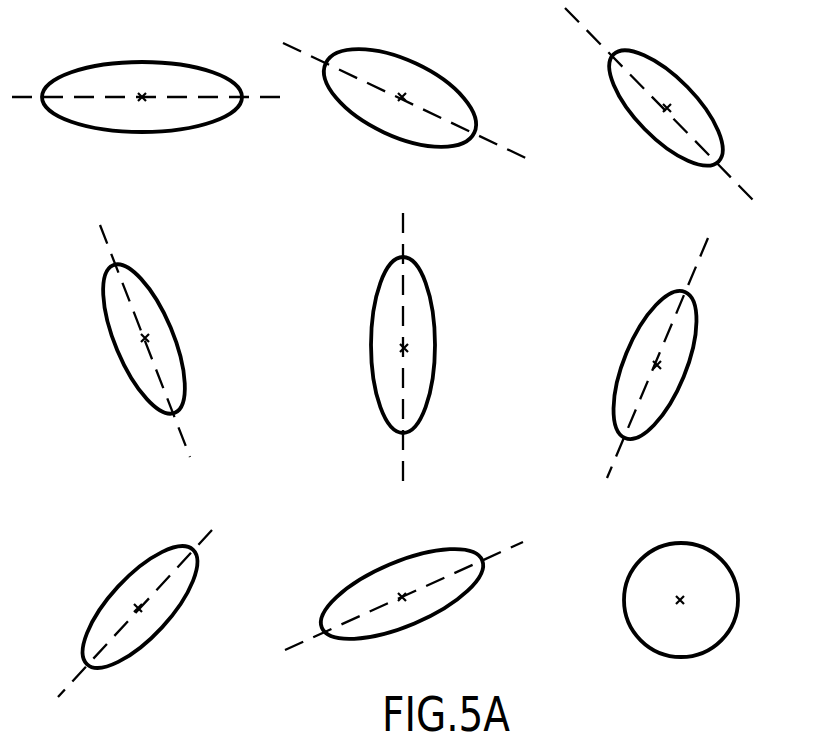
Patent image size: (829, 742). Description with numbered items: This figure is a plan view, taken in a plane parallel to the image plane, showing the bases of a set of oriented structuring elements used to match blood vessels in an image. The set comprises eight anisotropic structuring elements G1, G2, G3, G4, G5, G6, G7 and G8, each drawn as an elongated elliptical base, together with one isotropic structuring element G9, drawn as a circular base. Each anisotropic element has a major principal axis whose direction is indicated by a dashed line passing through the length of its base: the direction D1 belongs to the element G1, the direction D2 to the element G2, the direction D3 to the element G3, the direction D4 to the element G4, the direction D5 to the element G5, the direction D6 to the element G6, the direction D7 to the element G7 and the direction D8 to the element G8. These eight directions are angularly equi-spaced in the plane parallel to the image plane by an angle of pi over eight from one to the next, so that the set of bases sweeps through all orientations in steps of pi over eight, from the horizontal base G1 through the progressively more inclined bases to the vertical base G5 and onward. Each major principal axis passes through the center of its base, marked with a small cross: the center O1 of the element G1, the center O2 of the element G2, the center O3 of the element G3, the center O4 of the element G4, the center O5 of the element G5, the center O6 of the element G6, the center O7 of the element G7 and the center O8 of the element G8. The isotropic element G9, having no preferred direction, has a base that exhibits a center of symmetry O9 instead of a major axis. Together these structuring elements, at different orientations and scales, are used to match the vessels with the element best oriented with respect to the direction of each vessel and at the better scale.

The anisotropic structuring element G1 is at (187, 112).
The center O1 is at (140, 98).
The major principal axis of orientation D1 is at (207, 95).
The anisotropic structuring element G2 is at (398, 122).
The center O2 is at (406, 96).
The major principal axis of orientation D2 is at (406, 101).
The anisotropic structuring element G3 is at (667, 75).
The center O3 is at (667, 111).
The major principal axis of orientation D3 is at (679, 122).
The anisotropic structuring element G4 is at (165, 348).
The center O4 is at (143, 340).
The major principal axis of orientation D4 is at (166, 341).
The anisotropic structuring element G5 is at (415, 312).
The center O5 is at (405, 349).
The major principal axis of orientation D5 is at (423, 350).
The anisotropic structuring element G6 is at (678, 335).
The center O6 is at (658, 364).
The major principal axis of orientation D6 is at (637, 360).
The anisotropic structuring element G7 is at (113, 615).
The center O7 is at (140, 608).
The major principal axis of orientation D7 is at (120, 613).
The anisotropic structuring element G8 is at (415, 568).
The center O8 is at (402, 597).
The major principal axis of orientation D8 is at (404, 619).
The isotropic structuring element G9 is at (692, 572).
The center of symmetry O9 is at (694, 603).